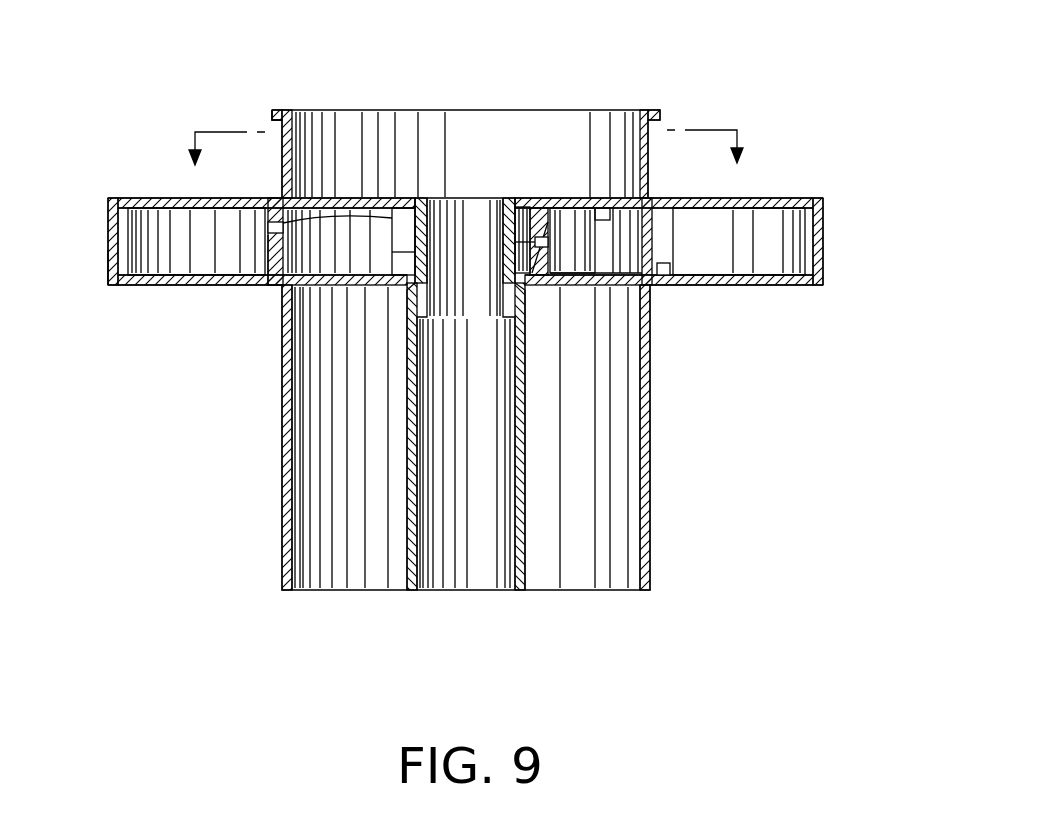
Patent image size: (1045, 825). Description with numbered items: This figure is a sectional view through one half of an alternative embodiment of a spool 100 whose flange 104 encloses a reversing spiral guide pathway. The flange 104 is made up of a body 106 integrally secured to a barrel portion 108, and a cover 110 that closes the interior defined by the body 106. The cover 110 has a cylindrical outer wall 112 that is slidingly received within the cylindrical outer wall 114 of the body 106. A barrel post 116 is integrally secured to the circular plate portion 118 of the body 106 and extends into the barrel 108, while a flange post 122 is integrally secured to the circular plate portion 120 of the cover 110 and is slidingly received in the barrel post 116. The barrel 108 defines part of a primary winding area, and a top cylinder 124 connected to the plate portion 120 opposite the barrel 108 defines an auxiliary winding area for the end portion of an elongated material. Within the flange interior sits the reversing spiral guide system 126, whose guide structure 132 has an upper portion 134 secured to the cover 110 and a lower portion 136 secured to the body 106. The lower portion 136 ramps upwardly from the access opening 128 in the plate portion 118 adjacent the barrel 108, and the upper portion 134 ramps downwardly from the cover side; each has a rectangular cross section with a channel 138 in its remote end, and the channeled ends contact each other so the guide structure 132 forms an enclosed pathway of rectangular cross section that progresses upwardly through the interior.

The spool 100 is at (480, 345).
The flange 104 is at (108, 258).
The body 106 is at (817, 283).
The barrel portion 108 is at (650, 447).
The cover 110 is at (797, 198).
The cylindrical outer wall 112 is at (130, 247).
The cylindrical outer wall 114 is at (108, 222).
The barrel post 116 is at (407, 543).
The circular plate portion 118 is at (763, 283).
The circular plate portion 120 is at (148, 229).
The flange post 122 is at (503, 225).
The top cylinder 124 is at (270, 120).
The reversing spiral guide system 126 is at (248, 234).
The access opening 128 is at (660, 283).
The guide structure 132 is at (663, 223).
The upper portion 134 is at (275, 207).
The lower portion 136 is at (272, 250).
The channel 138 is at (537, 235).